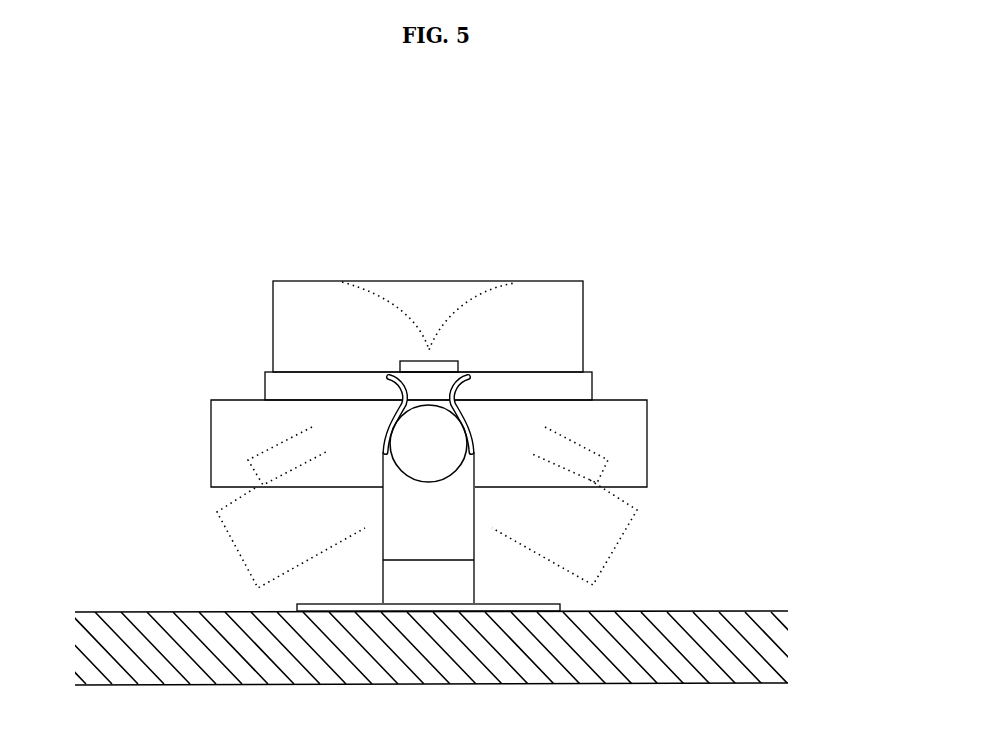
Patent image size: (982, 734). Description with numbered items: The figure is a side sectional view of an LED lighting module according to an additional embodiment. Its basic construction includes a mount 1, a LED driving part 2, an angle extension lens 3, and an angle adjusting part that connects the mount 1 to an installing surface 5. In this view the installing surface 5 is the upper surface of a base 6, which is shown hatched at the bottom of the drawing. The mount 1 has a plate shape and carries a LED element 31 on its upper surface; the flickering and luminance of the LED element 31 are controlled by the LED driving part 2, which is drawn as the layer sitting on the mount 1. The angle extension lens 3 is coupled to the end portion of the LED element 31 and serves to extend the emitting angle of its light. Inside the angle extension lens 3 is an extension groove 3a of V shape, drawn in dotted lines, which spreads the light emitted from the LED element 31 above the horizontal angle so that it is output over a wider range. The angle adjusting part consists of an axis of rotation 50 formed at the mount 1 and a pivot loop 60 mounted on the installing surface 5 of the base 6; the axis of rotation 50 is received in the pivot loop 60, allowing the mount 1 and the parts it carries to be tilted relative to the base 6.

The mount 1 is at (217, 457).
The LED driving part 2 is at (580, 385).
The angle extension lens 3 is at (565, 292).
The extension groove 3a is at (472, 300).
The LED element 31 is at (458, 363).
The axis of rotation 50 is at (410, 434).
The pivot loop 60 is at (470, 450).
The installing surface 5 is at (338, 604).
The base 6 is at (558, 608).